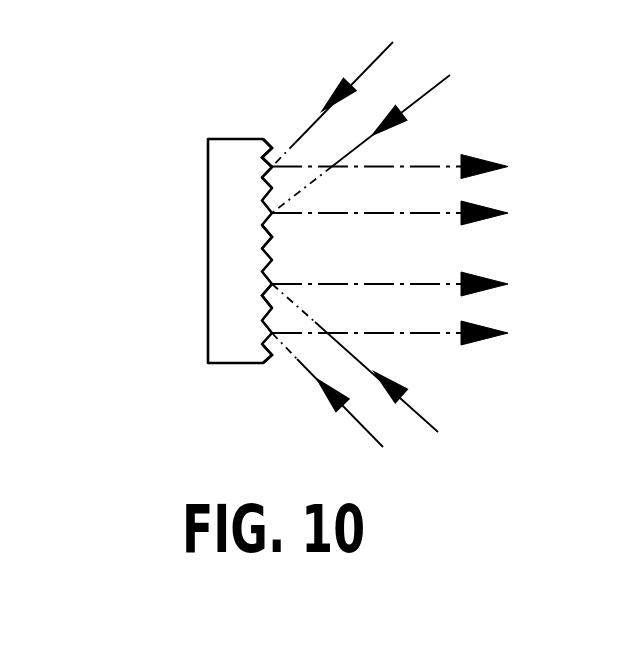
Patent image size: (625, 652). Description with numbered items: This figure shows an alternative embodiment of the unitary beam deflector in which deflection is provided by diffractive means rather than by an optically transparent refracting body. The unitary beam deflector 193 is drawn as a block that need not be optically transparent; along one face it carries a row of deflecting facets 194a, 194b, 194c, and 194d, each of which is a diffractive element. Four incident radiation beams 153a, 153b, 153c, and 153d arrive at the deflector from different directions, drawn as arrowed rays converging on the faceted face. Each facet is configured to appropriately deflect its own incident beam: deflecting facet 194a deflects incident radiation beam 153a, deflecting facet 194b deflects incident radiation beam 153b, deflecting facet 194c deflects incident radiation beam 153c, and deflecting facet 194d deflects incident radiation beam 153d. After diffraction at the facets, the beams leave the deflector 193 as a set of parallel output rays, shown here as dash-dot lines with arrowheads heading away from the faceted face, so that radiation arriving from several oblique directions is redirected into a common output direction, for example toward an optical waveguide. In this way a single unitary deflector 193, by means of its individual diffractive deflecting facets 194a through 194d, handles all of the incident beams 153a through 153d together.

The unitary beam deflector 193 is at (208, 139).
The deflecting facet 194a is at (291, 90).
The deflecting facet 194b is at (267, 233).
The deflecting facet 194c is at (265, 292).
The deflecting facet 194d is at (263, 363).
The incident radiation beam 153a is at (372, 61).
The incident radiation beam 153b is at (427, 94).
The incident radiation beam 153c is at (431, 425).
The incident radiation beam 153d is at (363, 430).